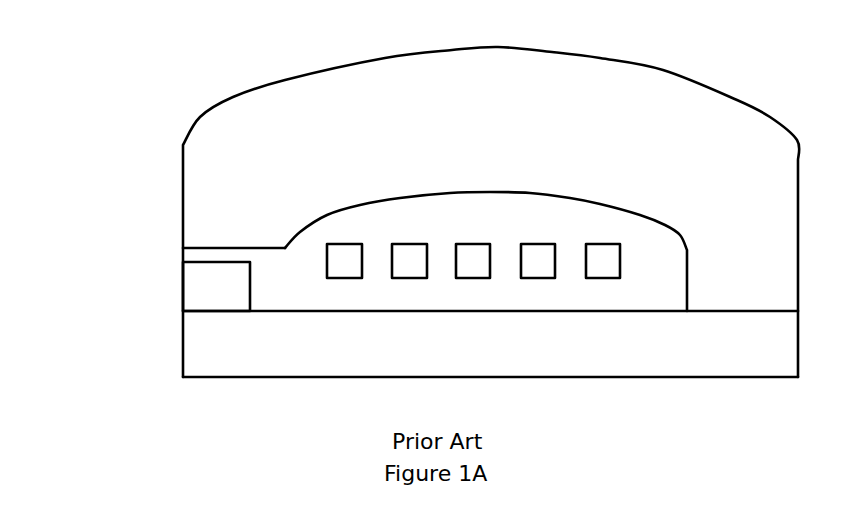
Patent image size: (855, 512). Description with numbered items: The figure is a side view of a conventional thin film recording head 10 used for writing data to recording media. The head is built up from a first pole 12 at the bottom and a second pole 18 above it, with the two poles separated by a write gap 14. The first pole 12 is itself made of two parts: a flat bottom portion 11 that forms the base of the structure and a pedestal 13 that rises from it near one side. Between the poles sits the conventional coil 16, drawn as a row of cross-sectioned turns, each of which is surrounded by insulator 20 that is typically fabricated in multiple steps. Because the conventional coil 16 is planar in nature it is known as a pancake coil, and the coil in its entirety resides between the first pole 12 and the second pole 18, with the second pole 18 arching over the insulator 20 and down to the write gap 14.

The conventional thin film recording head 10 is at (394, 28).
The bottom portion 11 is at (470, 358).
The first pole 12 is at (417, 333).
The pedestal 13 is at (161, 262).
The write gap 14 is at (183, 253).
The conventional coil 16 is at (348, 244).
The second pole 18 is at (183, 183).
The insulator 20 is at (327, 213).